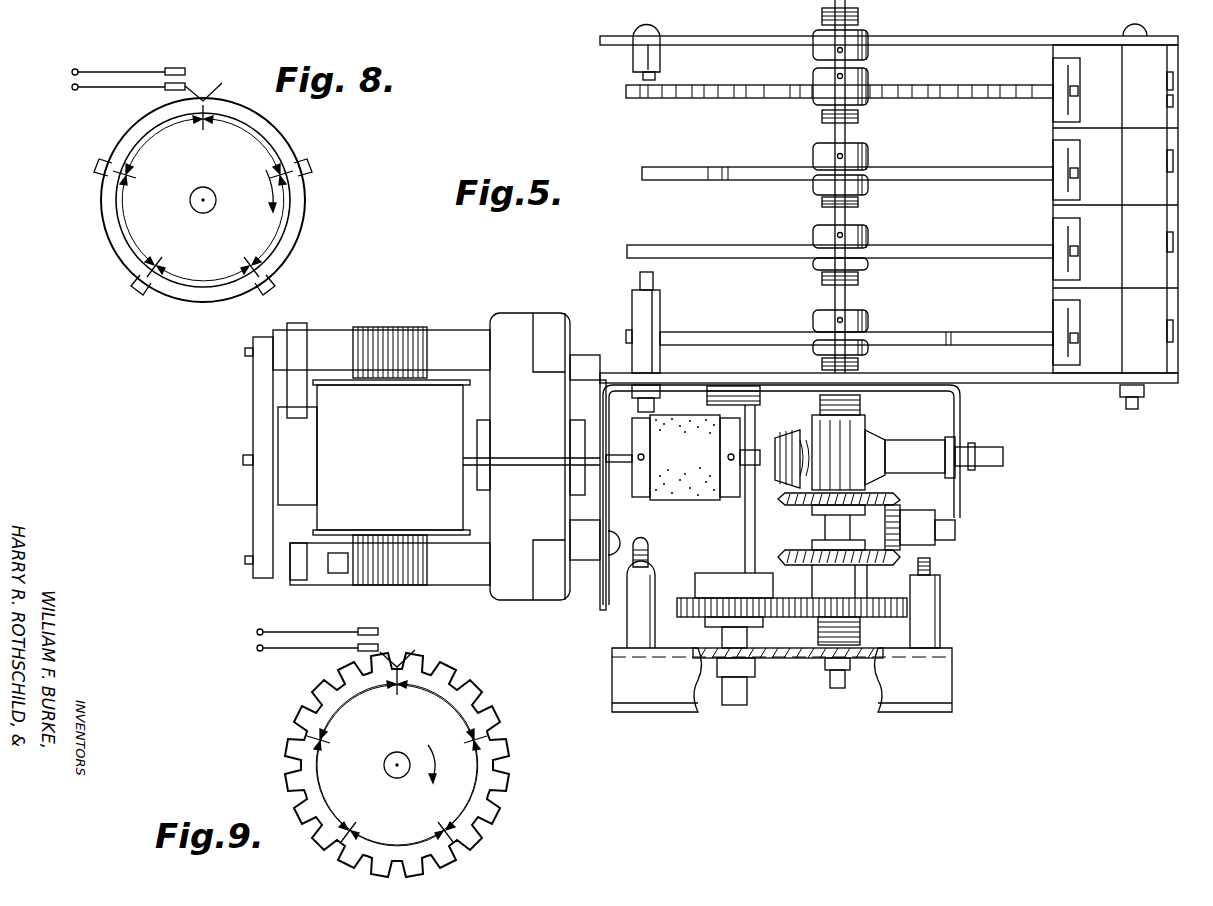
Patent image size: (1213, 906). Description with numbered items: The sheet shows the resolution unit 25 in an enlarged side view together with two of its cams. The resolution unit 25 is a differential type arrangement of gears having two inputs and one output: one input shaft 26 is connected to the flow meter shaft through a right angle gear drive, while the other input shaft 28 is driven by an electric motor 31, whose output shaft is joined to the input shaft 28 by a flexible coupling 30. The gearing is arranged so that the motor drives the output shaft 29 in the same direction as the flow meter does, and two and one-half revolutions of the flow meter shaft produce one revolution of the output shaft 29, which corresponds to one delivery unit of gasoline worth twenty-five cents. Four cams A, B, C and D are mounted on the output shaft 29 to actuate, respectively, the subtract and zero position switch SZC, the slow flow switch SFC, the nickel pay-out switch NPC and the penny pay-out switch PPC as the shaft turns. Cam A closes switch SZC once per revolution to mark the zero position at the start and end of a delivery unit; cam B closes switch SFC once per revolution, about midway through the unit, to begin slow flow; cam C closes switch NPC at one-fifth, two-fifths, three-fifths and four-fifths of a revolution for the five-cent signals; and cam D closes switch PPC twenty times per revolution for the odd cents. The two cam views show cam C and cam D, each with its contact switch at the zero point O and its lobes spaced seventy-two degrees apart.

In FIG. 5, the resolution unit 25 is at (998, 556).
In FIG. 5, the input shaft 26 is at (743, 690).
In FIG. 5, the input shaft 28 is at (985, 452).
In FIG. 5, the output shaft 29 is at (838, 683).
In FIG. 5, the flexible coupling 30 is at (678, 470).
In FIG. 5, the electric motor 31 is at (430, 398).
In FIG. 5, the cam A is at (767, 335).
In FIG. 5, the cam B is at (767, 250).
In FIG. 8, the cam C is at (115, 232).
In FIG. 5, the cam C is at (770, 172).
In FIG. 9, the cam D is at (305, 762).
In FIG. 5, the cam D is at (762, 88).
In FIG. 8, the zero reference notch O is at (204, 63).
In FIG. 9, the zero reference notch O is at (398, 629).
In FIG. 9, the penny pay-out switch PPC is at (312, 650).
In FIG. 5, the penny pay-out switch PPC is at (1090, 112).
In FIG. 8, the nickel pay-out switch NPC is at (118, 88).
In FIG. 5, the nickel pay-out switch NPC is at (1090, 188).
In FIG. 5, the slow flow switch SFC is at (1090, 268).
In FIG. 5, the subtract and zero position switch SZC is at (1095, 308).